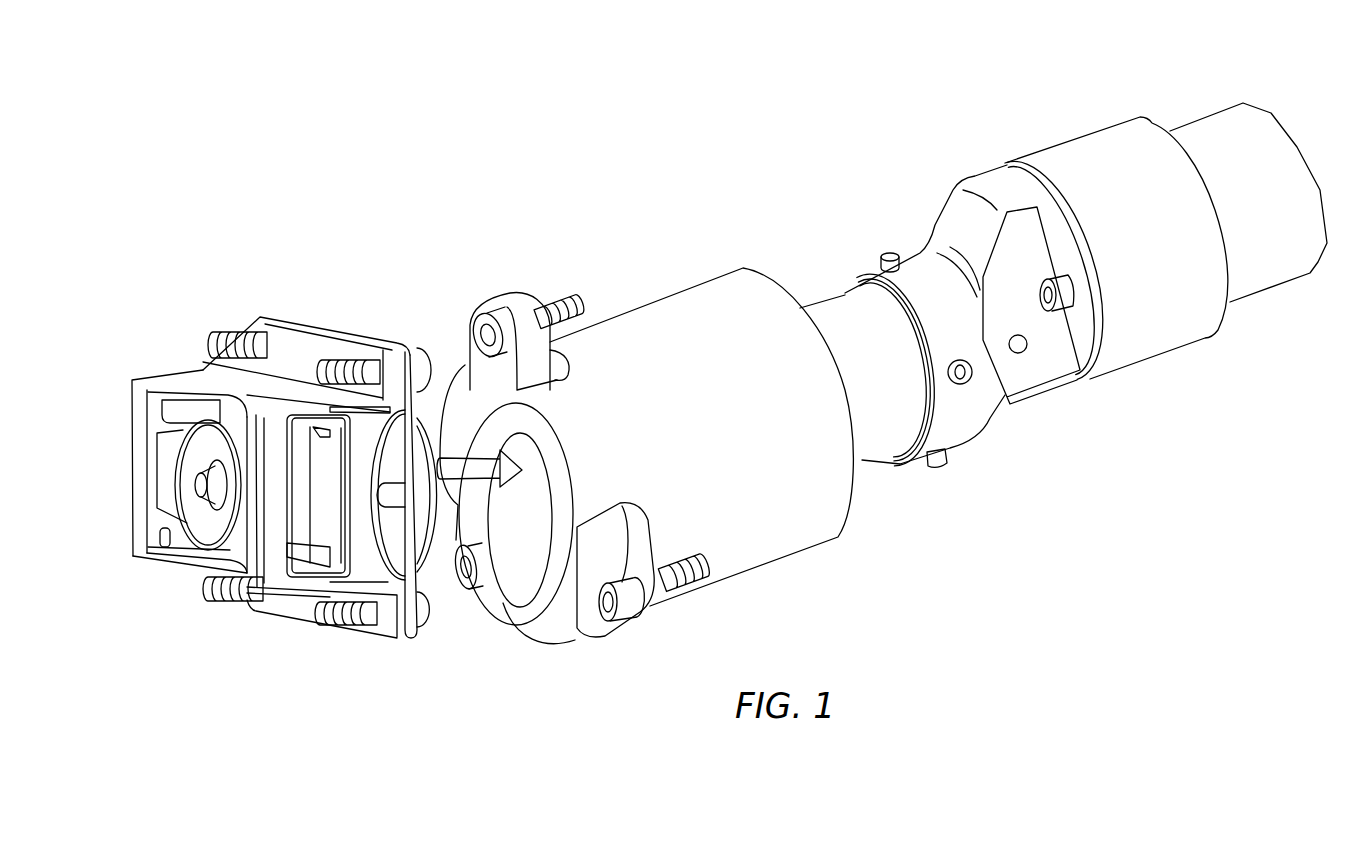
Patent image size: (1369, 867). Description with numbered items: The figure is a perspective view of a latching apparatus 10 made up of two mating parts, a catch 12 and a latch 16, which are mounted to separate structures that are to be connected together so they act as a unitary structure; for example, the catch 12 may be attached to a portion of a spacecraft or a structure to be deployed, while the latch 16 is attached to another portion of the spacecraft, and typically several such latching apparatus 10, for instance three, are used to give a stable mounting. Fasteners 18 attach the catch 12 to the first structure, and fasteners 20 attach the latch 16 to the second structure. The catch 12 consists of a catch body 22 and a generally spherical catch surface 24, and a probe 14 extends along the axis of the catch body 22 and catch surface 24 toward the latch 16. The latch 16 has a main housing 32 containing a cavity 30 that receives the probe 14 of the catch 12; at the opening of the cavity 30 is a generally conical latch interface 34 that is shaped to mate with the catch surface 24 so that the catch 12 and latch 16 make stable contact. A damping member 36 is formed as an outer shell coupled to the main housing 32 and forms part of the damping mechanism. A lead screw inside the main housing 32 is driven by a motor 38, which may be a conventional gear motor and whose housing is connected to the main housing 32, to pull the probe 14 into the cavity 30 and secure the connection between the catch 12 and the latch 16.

The latching apparatus 10 is at (410, 200).
The catch 12 is at (215, 265).
The probe 14 is at (437, 380).
The latch 16 is at (1003, 110).
The fasteners 18 is at (228, 330).
The fasteners 20 is at (553, 297).
The catch body 22 is at (132, 427).
The catch surface 24 is at (433, 538).
The cavity 30 is at (560, 547).
The main housing 32 is at (868, 440).
The latch interface 34 is at (523, 577).
The damping member 36 is at (803, 555).
The motor 38 is at (1153, 330).